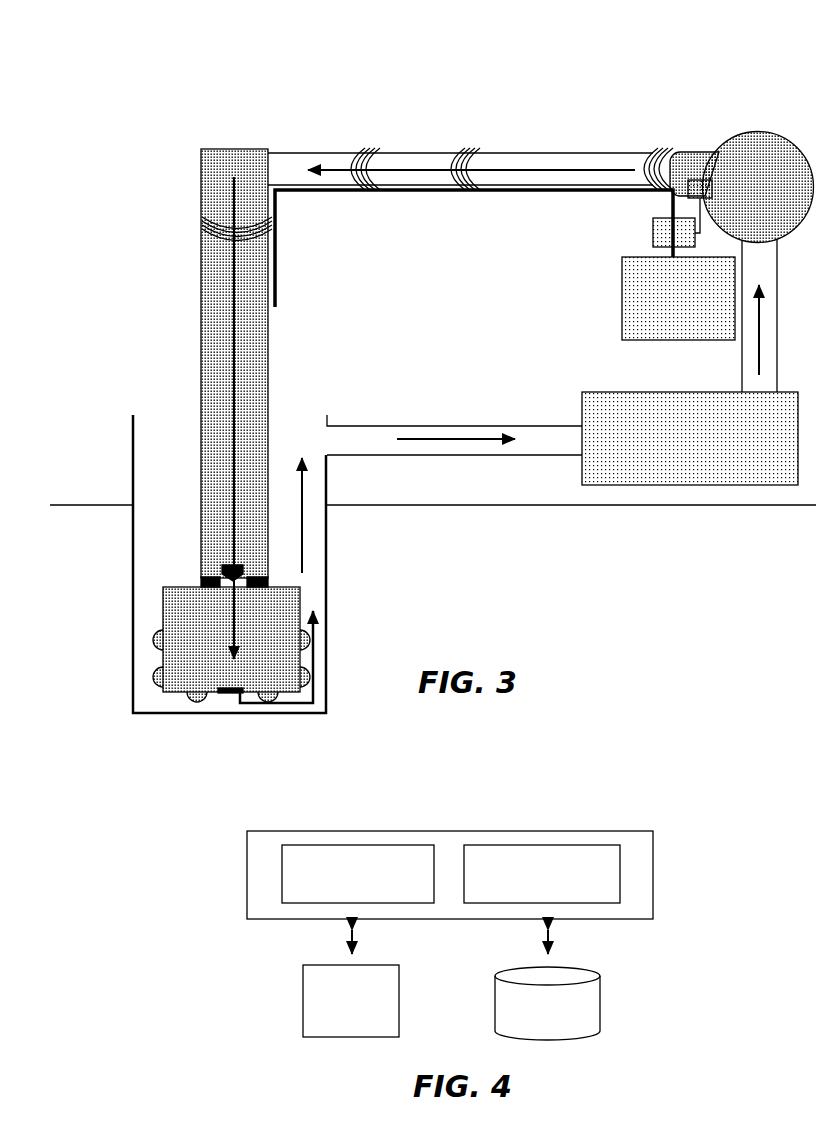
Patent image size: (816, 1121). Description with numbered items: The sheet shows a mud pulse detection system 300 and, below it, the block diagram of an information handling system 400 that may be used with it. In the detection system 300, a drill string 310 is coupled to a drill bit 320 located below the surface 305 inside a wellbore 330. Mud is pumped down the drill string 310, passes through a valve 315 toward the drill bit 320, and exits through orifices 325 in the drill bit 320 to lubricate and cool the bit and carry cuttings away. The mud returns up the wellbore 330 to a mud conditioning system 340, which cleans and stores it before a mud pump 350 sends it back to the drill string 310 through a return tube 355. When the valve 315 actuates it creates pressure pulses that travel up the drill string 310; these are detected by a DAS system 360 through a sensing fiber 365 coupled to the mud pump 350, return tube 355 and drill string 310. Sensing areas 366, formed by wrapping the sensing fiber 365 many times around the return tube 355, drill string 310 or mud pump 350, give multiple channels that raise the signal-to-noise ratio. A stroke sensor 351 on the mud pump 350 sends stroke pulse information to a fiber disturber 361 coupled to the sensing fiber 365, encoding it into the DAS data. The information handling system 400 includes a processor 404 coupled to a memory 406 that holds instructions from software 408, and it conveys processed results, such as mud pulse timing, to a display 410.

In FIG. 3, the mud pulse detection system 300 is at (647, 54).
In FIG. 3, the surface 305 is at (98, 501).
In FIG. 3, the drill string 310 is at (199, 332).
In FIG. 3, the valve 315 is at (209, 572).
In FIG. 3, the drill bit 320 is at (181, 637).
In FIG. 3, the orifices 325 is at (230, 697).
In FIG. 3, the wellbore 330 is at (328, 585).
In FIG. 3, the mud conditioning system 340 is at (690, 438).
In FIG. 3, the mud pump 350 is at (742, 187).
In FIG. 3, the stroke sensor 351 is at (701, 177).
In FIG. 3, the return tube 355 is at (603, 150).
In FIG. 3, the DAS system 360 is at (678, 298).
In FIG. 3, the fiber disturber 361 is at (674, 232).
In FIG. 3, the sensing fiber 365 is at (517, 197).
In FIG. 3, the sensing areas 366 is at (369, 146).
In FIG. 4, the information handling system 400 is at (610, 772).
In FIG. 4, the processor 404 is at (358, 874).
In FIG. 4, the memory 406 is at (542, 874).
In FIG. 4, the software 408 is at (547, 1003).
In FIG. 4, the display 410 is at (351, 1001).